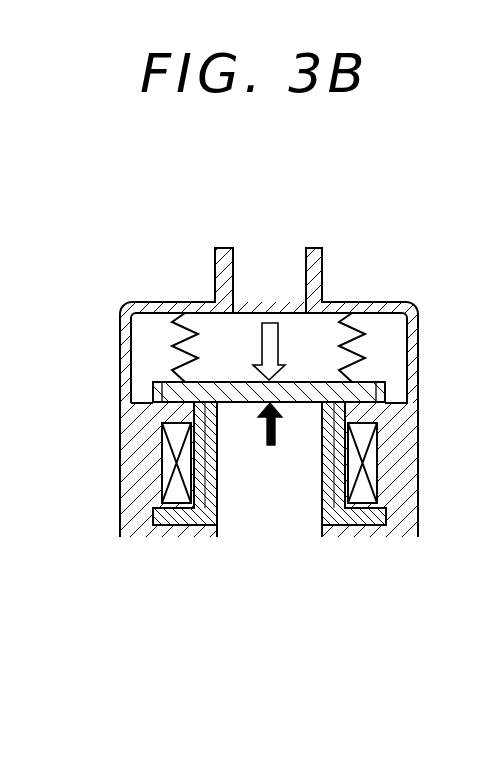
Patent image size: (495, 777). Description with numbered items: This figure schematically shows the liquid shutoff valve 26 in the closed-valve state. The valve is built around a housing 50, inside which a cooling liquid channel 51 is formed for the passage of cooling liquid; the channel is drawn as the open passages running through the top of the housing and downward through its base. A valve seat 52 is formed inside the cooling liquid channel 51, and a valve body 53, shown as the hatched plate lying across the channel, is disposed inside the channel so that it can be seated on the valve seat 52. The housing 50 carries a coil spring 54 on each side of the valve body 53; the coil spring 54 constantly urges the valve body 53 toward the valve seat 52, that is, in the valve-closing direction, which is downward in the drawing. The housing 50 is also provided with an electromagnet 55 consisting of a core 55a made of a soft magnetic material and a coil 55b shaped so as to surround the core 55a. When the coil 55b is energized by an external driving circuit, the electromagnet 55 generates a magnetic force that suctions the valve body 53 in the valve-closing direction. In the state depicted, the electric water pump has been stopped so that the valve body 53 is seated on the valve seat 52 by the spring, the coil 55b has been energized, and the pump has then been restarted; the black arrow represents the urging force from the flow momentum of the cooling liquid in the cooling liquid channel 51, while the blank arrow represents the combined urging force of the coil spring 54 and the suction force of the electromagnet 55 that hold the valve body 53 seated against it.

The liquid shutoff valve 26 is at (393, 241).
The housing 50 is at (120, 434).
The cooling liquid channel 51 is at (304, 270).
The valve seat 52 is at (156, 394).
The valve body 53 is at (165, 381).
The coil spring 54 is at (170, 338).
The electromagnet 55 is at (263, 495).
The core 55a is at (183, 526).
The coil 55b is at (162, 468).